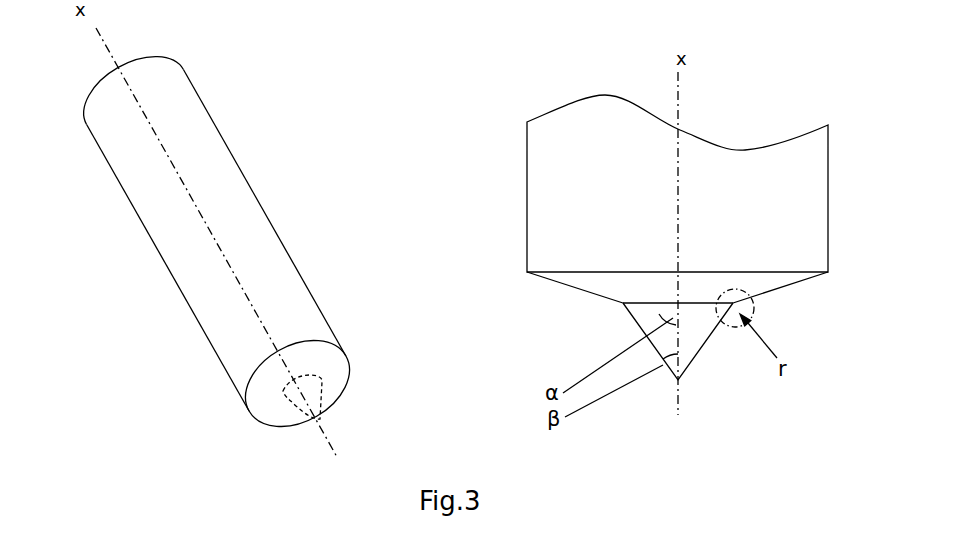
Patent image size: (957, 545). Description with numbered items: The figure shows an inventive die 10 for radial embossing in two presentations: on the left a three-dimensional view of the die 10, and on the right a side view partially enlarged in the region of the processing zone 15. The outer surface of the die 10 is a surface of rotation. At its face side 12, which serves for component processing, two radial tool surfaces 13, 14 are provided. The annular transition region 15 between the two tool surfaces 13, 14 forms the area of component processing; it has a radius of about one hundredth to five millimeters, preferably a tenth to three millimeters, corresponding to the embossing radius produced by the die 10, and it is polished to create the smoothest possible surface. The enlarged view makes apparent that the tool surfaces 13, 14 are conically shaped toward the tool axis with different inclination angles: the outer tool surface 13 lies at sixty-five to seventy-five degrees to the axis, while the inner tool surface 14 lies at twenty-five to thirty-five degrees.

The die 10 is at (565, 163).
The face side 12 is at (800, 301).
The outer tool surface 13 is at (318, 362).
The inner tool surface 14 is at (313, 400).
The annular transition region 15 is at (297, 381).